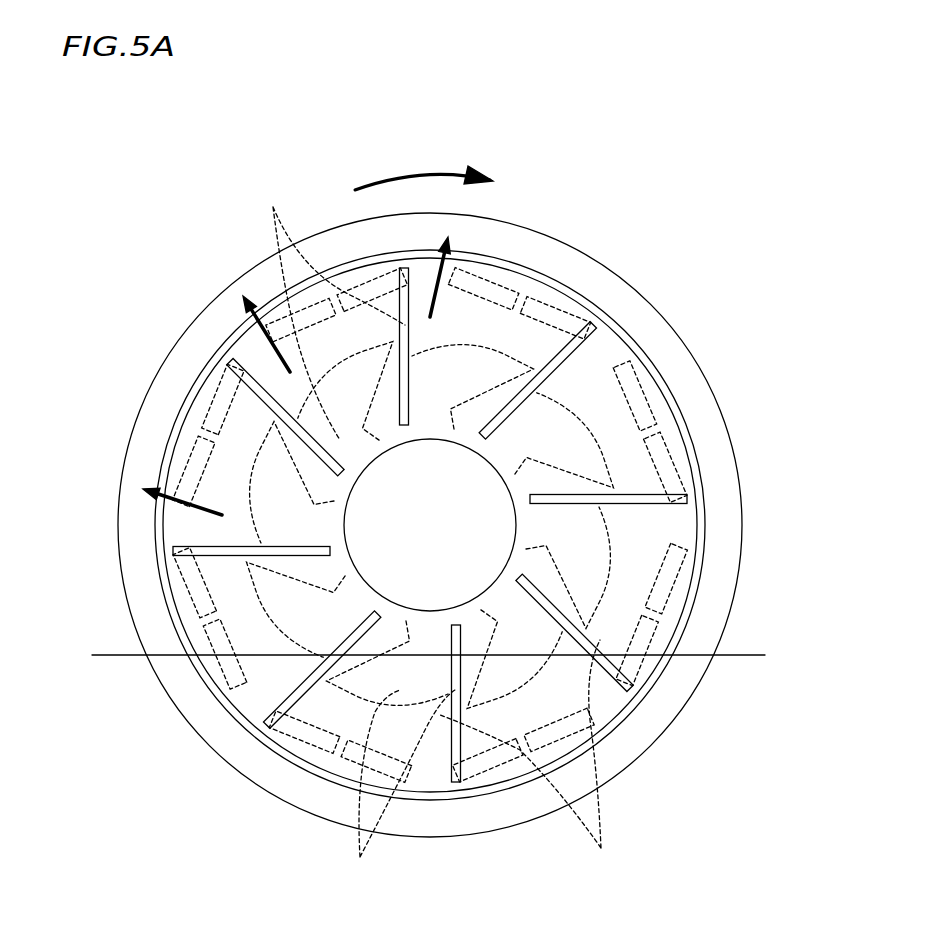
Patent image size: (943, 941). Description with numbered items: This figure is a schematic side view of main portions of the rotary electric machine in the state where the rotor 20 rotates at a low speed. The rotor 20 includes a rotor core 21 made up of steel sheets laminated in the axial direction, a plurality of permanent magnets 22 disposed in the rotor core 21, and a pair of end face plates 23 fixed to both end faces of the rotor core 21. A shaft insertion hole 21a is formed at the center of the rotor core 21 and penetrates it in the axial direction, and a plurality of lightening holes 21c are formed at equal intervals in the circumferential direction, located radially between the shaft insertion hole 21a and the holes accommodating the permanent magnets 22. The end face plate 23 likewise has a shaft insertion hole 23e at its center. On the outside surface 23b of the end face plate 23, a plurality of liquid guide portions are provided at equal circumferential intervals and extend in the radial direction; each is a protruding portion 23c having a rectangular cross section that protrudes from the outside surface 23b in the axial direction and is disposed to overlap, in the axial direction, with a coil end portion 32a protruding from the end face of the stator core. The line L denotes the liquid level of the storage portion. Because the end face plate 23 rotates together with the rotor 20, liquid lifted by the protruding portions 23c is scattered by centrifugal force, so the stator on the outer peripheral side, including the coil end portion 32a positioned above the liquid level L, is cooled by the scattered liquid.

The rotor 20 is at (531, 141).
The rotor core 21 is at (272, 682).
The shaft insertion hole 21a is at (430, 445).
The lightening hole 21c is at (394, 793).
The permanent magnet 22 is at (695, 610).
The end face plate 23 is at (624, 337).
The outside surface 23b is at (611, 408).
The protruding portion 23c is at (435, 532).
The shaft insertion hole 23e is at (349, 513).
The coil end portion 32a is at (548, 254).
The liquid level L is at (728, 656).